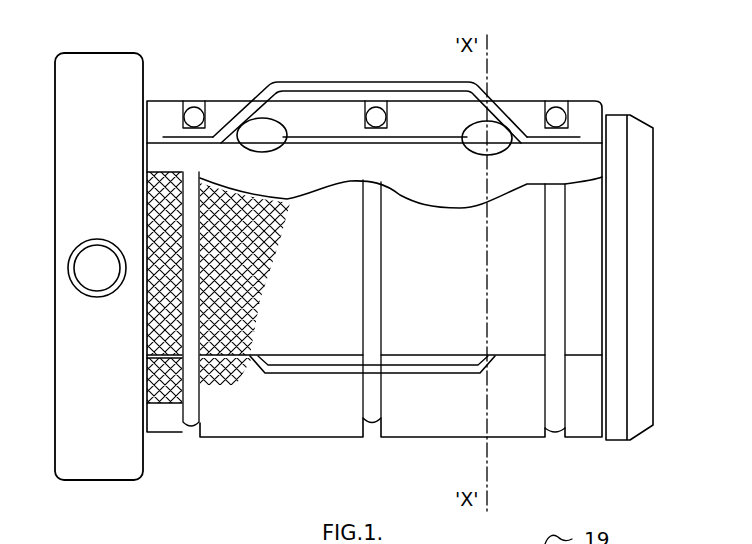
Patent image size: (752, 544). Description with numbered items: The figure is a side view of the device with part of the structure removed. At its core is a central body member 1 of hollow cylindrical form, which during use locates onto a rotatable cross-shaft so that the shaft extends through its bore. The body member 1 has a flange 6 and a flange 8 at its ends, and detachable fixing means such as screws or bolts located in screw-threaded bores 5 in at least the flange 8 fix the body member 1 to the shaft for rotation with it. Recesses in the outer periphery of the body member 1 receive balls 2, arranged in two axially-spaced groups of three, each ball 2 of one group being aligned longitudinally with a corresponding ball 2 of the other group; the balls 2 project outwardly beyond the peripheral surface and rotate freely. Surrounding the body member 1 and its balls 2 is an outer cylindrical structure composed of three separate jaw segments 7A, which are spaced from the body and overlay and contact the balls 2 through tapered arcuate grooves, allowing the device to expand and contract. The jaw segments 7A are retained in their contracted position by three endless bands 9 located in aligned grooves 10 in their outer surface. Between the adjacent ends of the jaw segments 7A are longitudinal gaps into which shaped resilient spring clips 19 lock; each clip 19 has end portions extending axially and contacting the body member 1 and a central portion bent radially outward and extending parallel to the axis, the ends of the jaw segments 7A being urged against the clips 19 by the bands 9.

The central body member 1 is at (553, 168).
The balls 2 is at (253, 132).
The screw-threaded bores 5 is at (93, 240).
The flange 6 is at (618, 138).
The jaw segments 7A is at (290, 125).
The flange 8 is at (128, 93).
The endless bands 9 is at (190, 105).
The grooves 10 is at (190, 428).
The resilient spring clips 19 is at (368, 88).